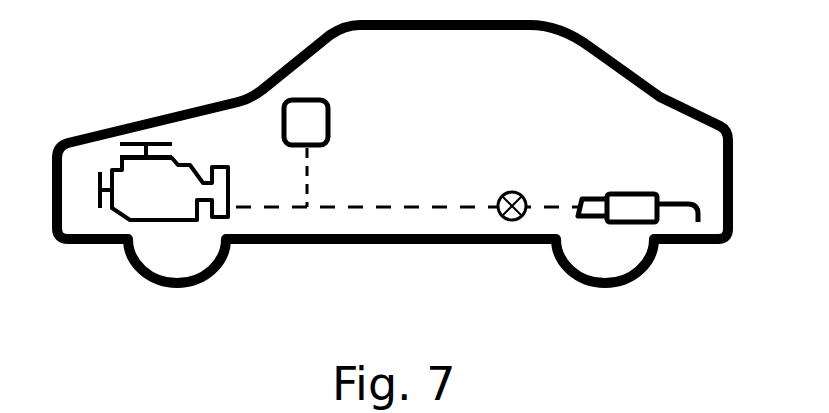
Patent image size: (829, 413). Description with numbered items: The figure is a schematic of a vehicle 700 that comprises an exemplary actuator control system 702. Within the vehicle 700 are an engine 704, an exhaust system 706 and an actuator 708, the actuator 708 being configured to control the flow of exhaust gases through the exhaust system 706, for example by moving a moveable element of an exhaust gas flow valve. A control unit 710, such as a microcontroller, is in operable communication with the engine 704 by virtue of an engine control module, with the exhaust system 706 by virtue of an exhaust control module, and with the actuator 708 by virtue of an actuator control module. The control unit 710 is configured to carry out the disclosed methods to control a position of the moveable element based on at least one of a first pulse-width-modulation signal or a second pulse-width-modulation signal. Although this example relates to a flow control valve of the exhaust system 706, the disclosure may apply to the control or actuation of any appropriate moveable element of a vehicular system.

The vehicle 700 is at (263, 78).
The actuator control system 702 is at (435, 142).
The engine 704 is at (135, 172).
The exhaust system 706 is at (640, 216).
The actuator 708 is at (513, 191).
The control unit 710 is at (307, 100).